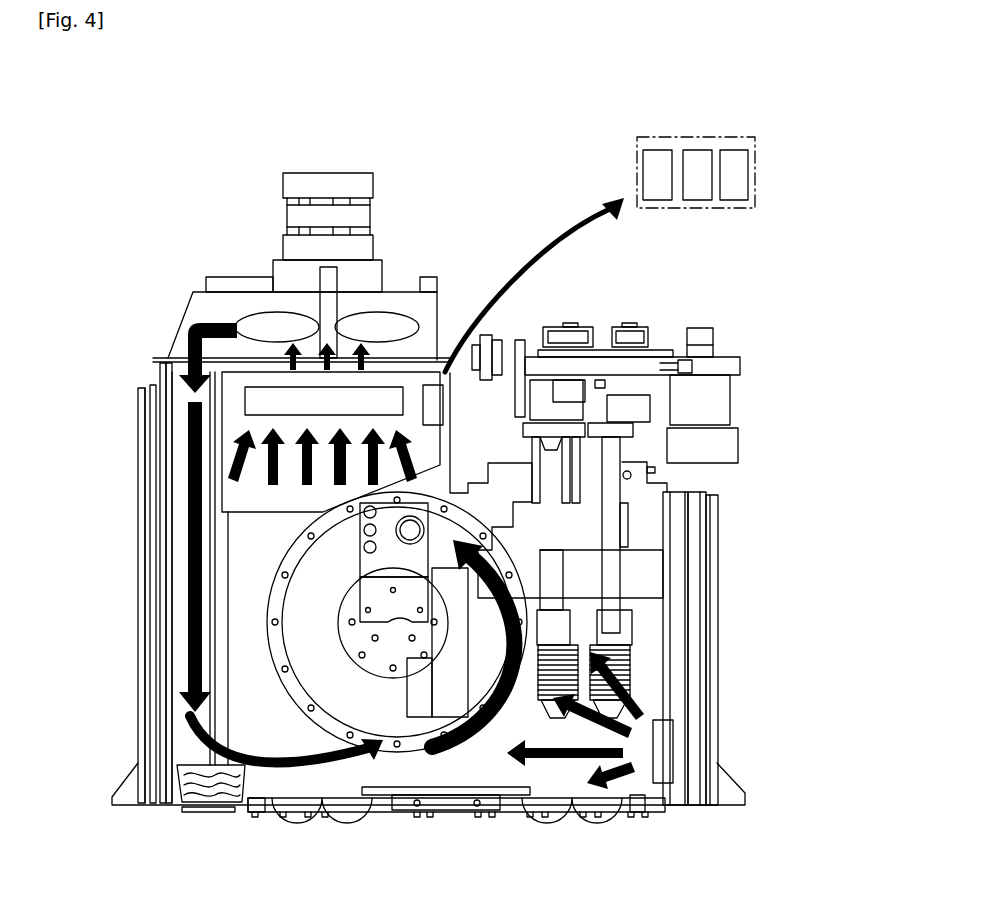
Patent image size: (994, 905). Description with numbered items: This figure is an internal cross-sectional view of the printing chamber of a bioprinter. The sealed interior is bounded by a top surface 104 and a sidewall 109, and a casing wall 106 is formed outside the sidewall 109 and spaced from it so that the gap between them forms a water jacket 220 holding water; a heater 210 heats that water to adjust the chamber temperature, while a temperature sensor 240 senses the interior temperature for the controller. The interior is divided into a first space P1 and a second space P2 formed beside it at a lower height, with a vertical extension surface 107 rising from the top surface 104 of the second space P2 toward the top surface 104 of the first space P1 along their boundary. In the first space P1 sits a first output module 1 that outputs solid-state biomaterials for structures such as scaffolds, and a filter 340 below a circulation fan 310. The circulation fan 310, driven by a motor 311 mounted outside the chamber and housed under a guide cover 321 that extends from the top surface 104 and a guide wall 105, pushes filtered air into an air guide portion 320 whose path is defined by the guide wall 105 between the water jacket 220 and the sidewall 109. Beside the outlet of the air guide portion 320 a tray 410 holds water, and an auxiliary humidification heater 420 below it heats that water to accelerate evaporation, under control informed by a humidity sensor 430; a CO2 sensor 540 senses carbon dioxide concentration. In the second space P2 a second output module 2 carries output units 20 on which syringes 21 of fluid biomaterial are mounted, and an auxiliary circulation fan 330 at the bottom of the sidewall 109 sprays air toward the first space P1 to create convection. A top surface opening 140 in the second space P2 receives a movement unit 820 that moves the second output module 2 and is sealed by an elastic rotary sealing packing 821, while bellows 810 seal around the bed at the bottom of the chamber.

The first output module 1 is at (373, 684).
The second output module 2 is at (624, 752).
The output unit 20 is at (545, 682).
The syringe 21 is at (552, 718).
The top surface 104 is at (168, 377).
The guide wall 105 is at (152, 362).
The casing wall 106 is at (148, 377).
The vertical extension surface 107 is at (450, 433).
The sidewall 109 is at (212, 607).
The top surface opening 140 is at (645, 452).
The heater 210 is at (147, 677).
The water jacket 220 is at (152, 487).
The temperature sensor 240 is at (658, 150).
The circulation fan 310 is at (388, 320).
The motor 311 is at (329, 173).
The air guide portion 320 is at (175, 730).
The guide cover 321 is at (237, 283).
The auxiliary circulation fan 330 is at (663, 752).
The filter 340 is at (390, 387).
The tray 410 is at (180, 783).
The auxiliary humidification heater 420 is at (203, 812).
The humidity sensor 430 is at (697, 150).
The CO2 sensor 540 is at (736, 150).
The bellows 810 is at (290, 815).
The movement unit 820 is at (680, 311).
The rotary sealing packing 821 is at (667, 492).
The first space P1 is at (251, 569).
The second space P2 is at (579, 778).